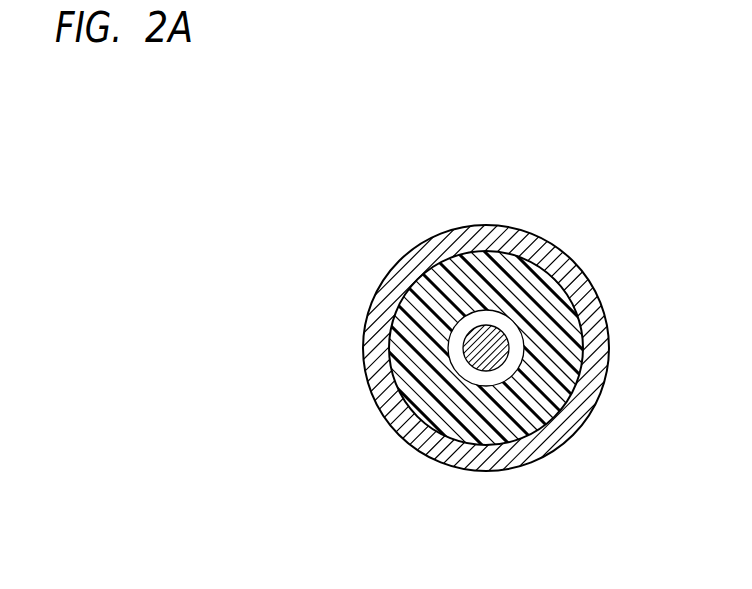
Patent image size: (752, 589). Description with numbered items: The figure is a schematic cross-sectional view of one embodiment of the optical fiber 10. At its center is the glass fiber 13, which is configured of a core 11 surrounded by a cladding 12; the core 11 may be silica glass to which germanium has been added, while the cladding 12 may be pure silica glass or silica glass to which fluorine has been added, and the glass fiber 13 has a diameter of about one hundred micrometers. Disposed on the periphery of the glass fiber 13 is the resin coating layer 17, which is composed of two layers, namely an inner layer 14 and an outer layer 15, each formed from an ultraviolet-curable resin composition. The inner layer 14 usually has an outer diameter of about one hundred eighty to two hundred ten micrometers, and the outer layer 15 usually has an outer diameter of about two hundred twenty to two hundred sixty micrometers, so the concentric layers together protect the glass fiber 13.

The optical fiber 10 is at (425, 215).
The core 11 is at (500, 338).
The cladding 12 is at (523, 361).
The glass fiber 13 is at (648, 303).
The inner layer 14 is at (552, 310).
The outer layer 15 is at (570, 264).
The resin coating layer 17 is at (622, 191).